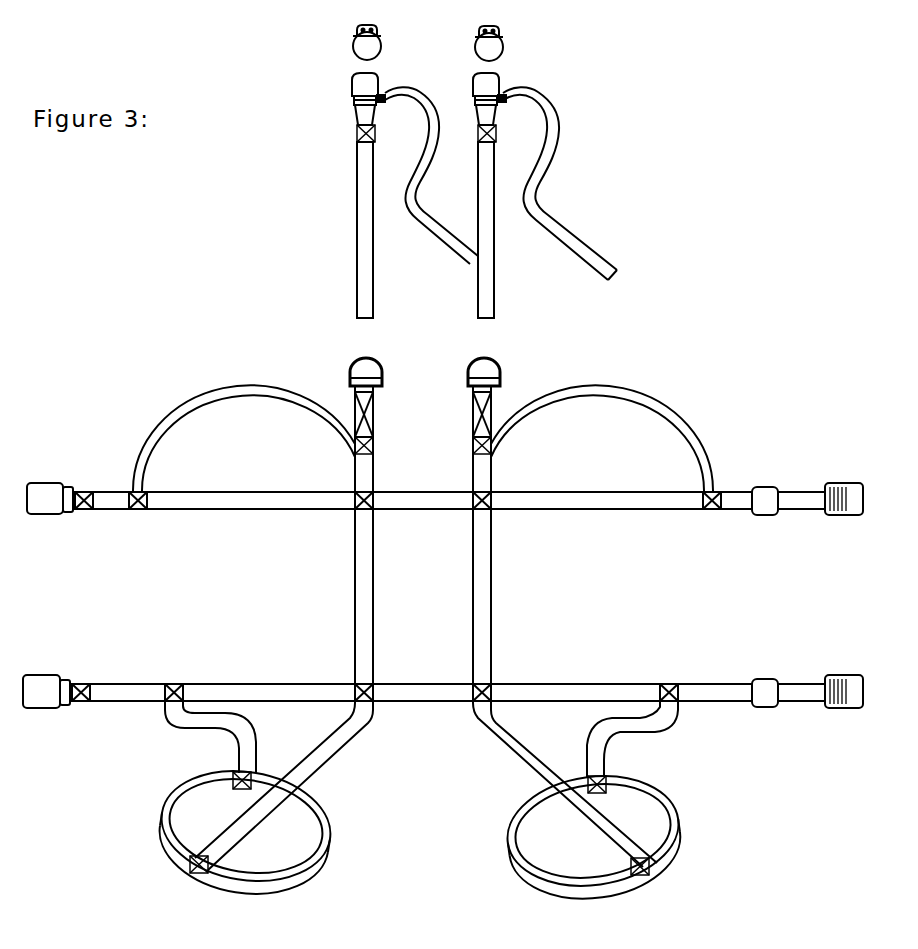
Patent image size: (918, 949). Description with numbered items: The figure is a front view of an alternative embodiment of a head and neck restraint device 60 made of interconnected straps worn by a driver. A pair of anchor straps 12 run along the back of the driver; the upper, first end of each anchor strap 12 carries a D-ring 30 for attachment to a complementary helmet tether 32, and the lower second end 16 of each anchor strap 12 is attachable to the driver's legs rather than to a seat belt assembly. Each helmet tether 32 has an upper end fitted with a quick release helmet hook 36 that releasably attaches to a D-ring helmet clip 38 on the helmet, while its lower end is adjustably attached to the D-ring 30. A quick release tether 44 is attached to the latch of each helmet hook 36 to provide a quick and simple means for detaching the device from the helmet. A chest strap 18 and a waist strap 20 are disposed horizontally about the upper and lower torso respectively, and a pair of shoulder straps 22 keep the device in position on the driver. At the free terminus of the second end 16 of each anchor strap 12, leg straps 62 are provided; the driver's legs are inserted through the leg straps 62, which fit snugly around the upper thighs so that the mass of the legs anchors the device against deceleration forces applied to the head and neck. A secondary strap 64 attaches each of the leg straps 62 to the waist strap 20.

The anchor straps 12 is at (355, 568).
The second end 16 is at (376, 722).
The chest strap 18 is at (532, 512).
The waist strap 20 is at (290, 682).
The shoulder straps 22 is at (200, 397).
The D-ring 30 is at (350, 360).
The helmet tether 32 is at (357, 213).
The quick release helmet hook 36 is at (352, 82).
The D-ring helmet clip 38 is at (355, 38).
The quick release tether 44 is at (563, 118).
The restraint device 60 is at (698, 235).
The leg straps 62 is at (322, 807).
The secondary strap 64 is at (190, 730).